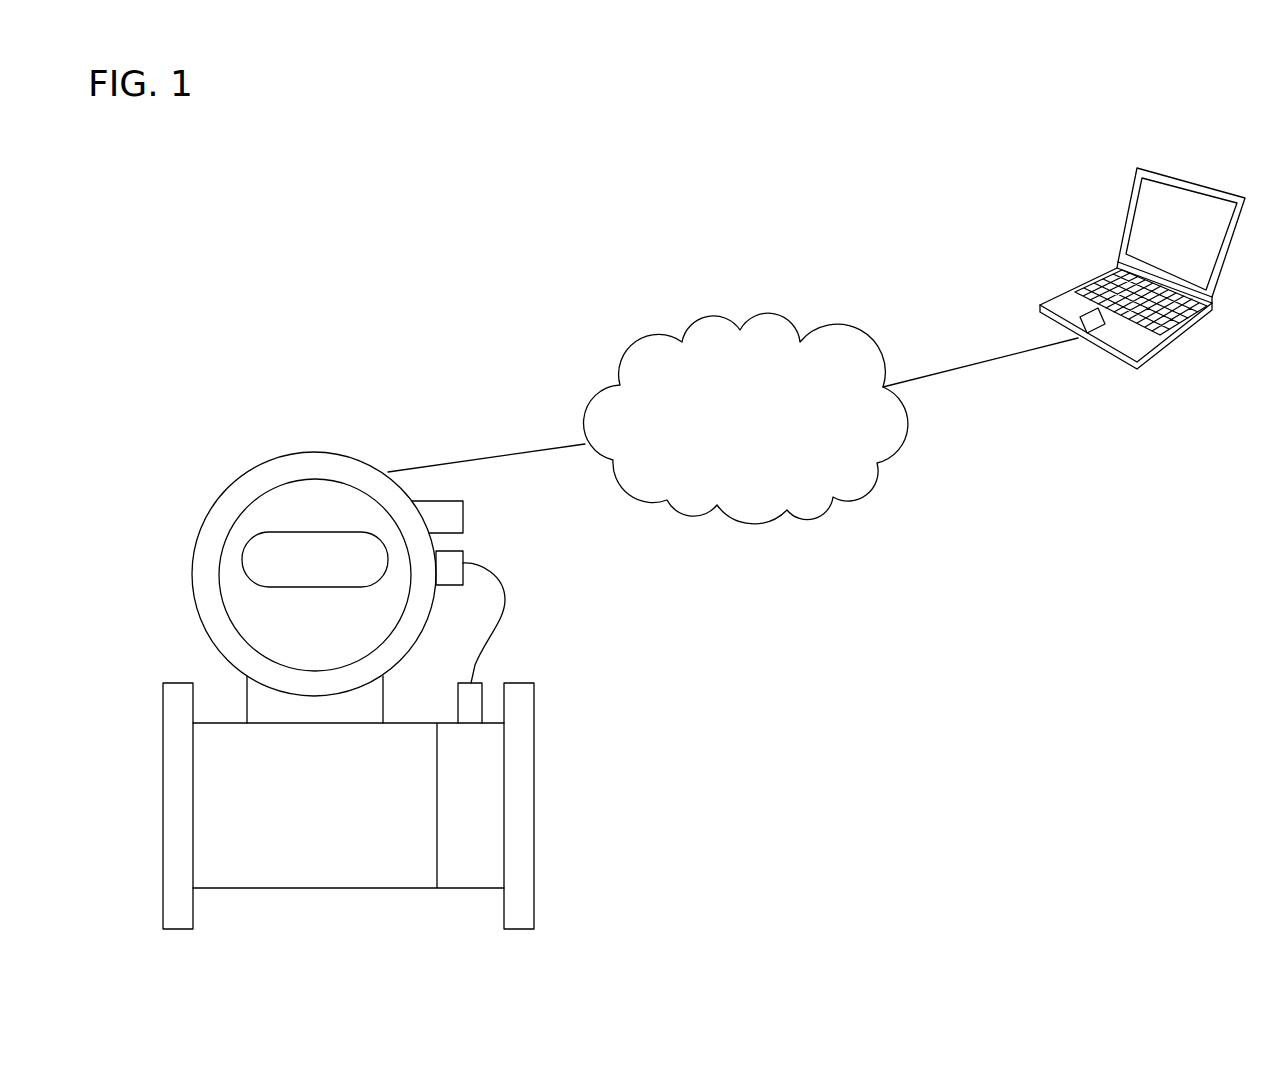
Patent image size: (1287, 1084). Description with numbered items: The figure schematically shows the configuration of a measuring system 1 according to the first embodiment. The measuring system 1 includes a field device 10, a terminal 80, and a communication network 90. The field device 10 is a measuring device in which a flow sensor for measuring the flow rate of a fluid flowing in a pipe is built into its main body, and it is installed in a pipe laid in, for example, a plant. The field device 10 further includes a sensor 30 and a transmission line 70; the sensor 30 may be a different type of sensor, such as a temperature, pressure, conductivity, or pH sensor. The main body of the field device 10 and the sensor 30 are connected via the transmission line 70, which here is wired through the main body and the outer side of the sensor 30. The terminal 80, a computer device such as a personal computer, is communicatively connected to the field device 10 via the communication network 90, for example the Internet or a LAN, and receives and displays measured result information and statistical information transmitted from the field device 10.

The measuring system 1 is at (954, 168).
The field device 10 is at (312, 452).
The sensor 30 is at (478, 681).
The transmission line 70 is at (497, 575).
The terminal 80 is at (1202, 185).
The communication network 90 is at (783, 325).